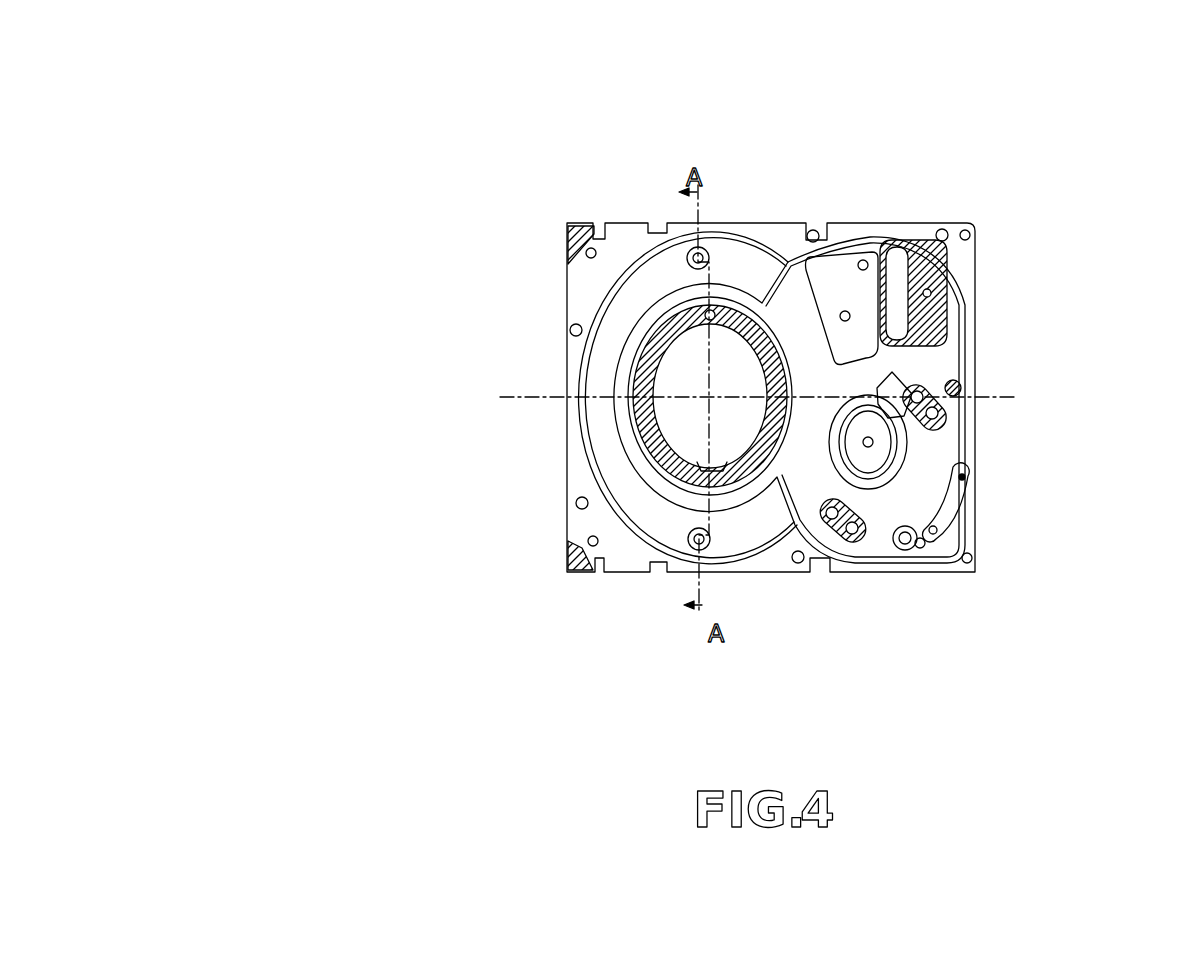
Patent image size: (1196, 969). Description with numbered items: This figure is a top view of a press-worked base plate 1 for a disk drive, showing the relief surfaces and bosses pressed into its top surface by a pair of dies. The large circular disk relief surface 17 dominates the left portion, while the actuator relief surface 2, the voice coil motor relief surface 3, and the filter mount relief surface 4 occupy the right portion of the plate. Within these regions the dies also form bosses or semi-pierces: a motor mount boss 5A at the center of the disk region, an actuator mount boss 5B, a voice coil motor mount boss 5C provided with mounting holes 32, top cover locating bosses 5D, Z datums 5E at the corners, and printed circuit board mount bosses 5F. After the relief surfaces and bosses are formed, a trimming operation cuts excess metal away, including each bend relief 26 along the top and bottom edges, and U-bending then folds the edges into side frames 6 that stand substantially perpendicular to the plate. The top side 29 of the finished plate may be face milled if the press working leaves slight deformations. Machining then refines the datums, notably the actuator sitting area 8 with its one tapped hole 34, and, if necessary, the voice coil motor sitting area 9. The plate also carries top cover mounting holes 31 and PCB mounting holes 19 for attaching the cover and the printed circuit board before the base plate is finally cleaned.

The base plate 1 is at (358, 174).
The actuator relief surface 2 is at (790, 292).
The voice coil motor relief surface 3 is at (896, 384).
The filter mount relief surface 4 is at (845, 280).
The motor mount boss 5A is at (635, 383).
The actuator mount boss 5B is at (961, 391).
The voice coil motor mount boss 5C is at (841, 629).
The top cover locating boss 5D is at (945, 230).
The Z datum 5E is at (583, 236).
The printed circuit board mount boss 5F is at (700, 247).
The side frame 6 is at (975, 543).
The actuator sitting area 8 is at (867, 460).
The voice coil motor sitting area 9 is at (939, 424).
The disk relief surface 17 is at (598, 455).
The PCB mounting holes 19 is at (917, 545).
The bend relief 26 is at (656, 222).
The top side 29 is at (582, 290).
The top cover mounting holes 31 is at (590, 247).
The mounting holes 32 is at (942, 417).
The tapped hole 34 is at (873, 445).